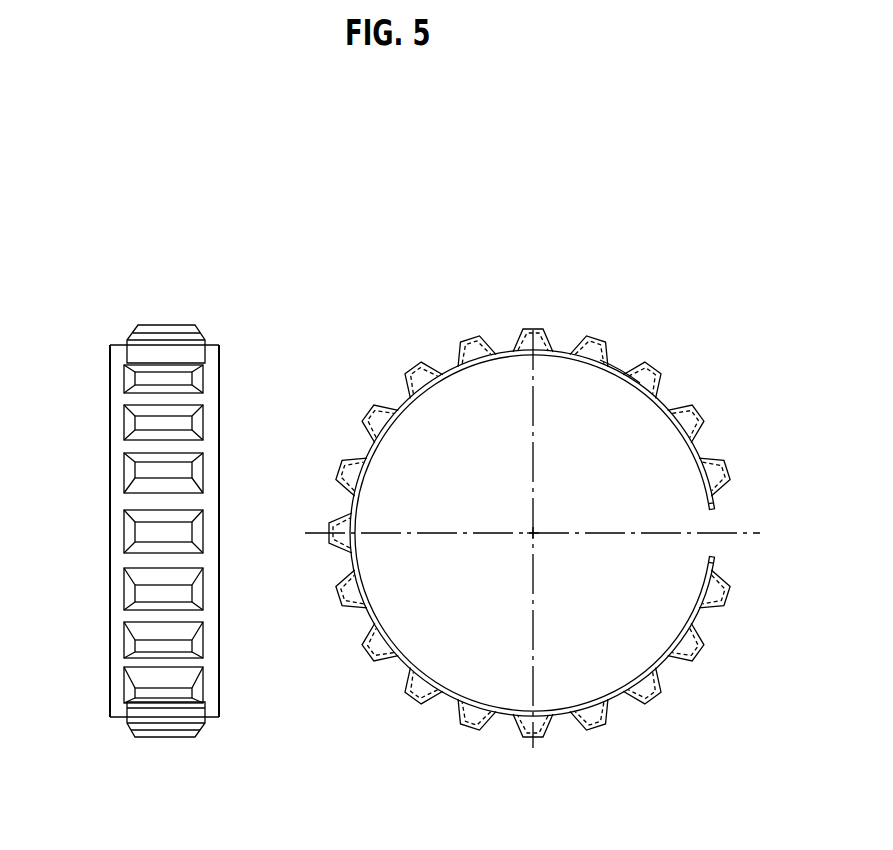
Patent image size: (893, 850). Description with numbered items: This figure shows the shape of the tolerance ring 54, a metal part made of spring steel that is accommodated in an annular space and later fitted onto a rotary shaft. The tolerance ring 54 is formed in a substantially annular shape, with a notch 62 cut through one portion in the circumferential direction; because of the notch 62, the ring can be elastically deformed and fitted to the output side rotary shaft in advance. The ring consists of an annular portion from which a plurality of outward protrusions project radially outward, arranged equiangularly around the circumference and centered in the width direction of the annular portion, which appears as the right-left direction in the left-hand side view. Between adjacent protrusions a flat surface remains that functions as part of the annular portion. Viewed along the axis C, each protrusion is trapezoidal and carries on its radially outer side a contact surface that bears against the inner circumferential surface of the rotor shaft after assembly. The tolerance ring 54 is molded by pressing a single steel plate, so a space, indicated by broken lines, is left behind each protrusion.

The tolerance ring 54 is at (332, 306).
The notch 62 is at (714, 508).
The axis C is at (530, 537).